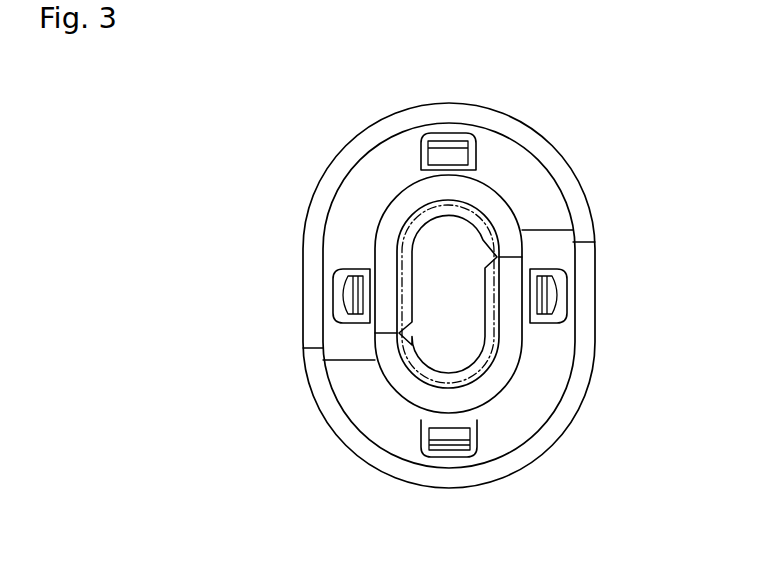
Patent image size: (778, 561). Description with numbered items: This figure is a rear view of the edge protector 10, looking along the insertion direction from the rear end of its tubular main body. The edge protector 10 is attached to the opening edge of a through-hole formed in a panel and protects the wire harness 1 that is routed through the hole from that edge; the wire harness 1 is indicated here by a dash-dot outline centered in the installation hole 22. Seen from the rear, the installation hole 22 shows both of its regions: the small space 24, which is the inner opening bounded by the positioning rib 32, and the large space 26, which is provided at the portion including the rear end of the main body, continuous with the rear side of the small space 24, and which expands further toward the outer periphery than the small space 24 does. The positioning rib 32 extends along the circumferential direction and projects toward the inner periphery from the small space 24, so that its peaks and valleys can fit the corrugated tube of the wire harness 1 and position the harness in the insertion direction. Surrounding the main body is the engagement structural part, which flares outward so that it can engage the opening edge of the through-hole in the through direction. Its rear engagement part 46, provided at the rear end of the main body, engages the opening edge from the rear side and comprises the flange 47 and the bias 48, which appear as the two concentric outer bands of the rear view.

The wire harness 1 is at (482, 200).
The edge protector 10 is at (237, 168).
The installation hole 22 is at (350, 70).
The small space 24 is at (408, 220).
The large space 26 is at (382, 232).
The positioning rib 32 is at (412, 283).
The rear engagement part 46 is at (579, 417).
The flange 47 is at (576, 341).
The bias 48 is at (580, 384).